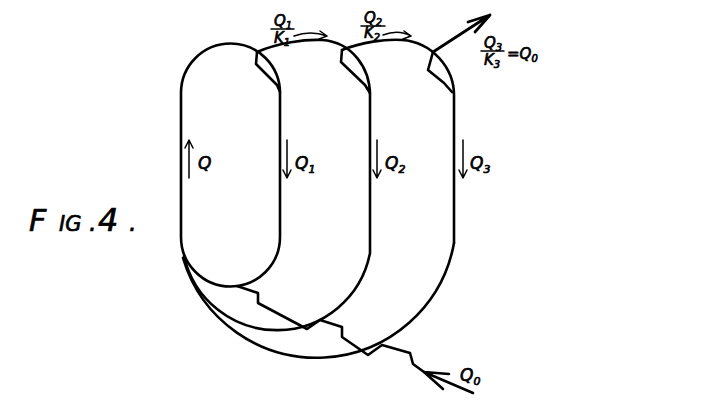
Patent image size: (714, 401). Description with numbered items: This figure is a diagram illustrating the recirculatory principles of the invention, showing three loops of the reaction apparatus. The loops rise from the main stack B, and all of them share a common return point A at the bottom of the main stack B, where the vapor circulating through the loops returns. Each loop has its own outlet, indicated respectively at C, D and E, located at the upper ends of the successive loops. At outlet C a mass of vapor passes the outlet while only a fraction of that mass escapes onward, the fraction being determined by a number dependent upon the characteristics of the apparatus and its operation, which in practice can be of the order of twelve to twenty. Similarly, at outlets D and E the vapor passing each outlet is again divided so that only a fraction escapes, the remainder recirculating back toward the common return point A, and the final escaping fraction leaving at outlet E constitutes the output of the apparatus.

The common return point A is at (183, 259).
The main stack B is at (179, 99).
The first outlet C is at (262, 73).
The second outlet D is at (350, 72).
The third outlet E is at (438, 82).